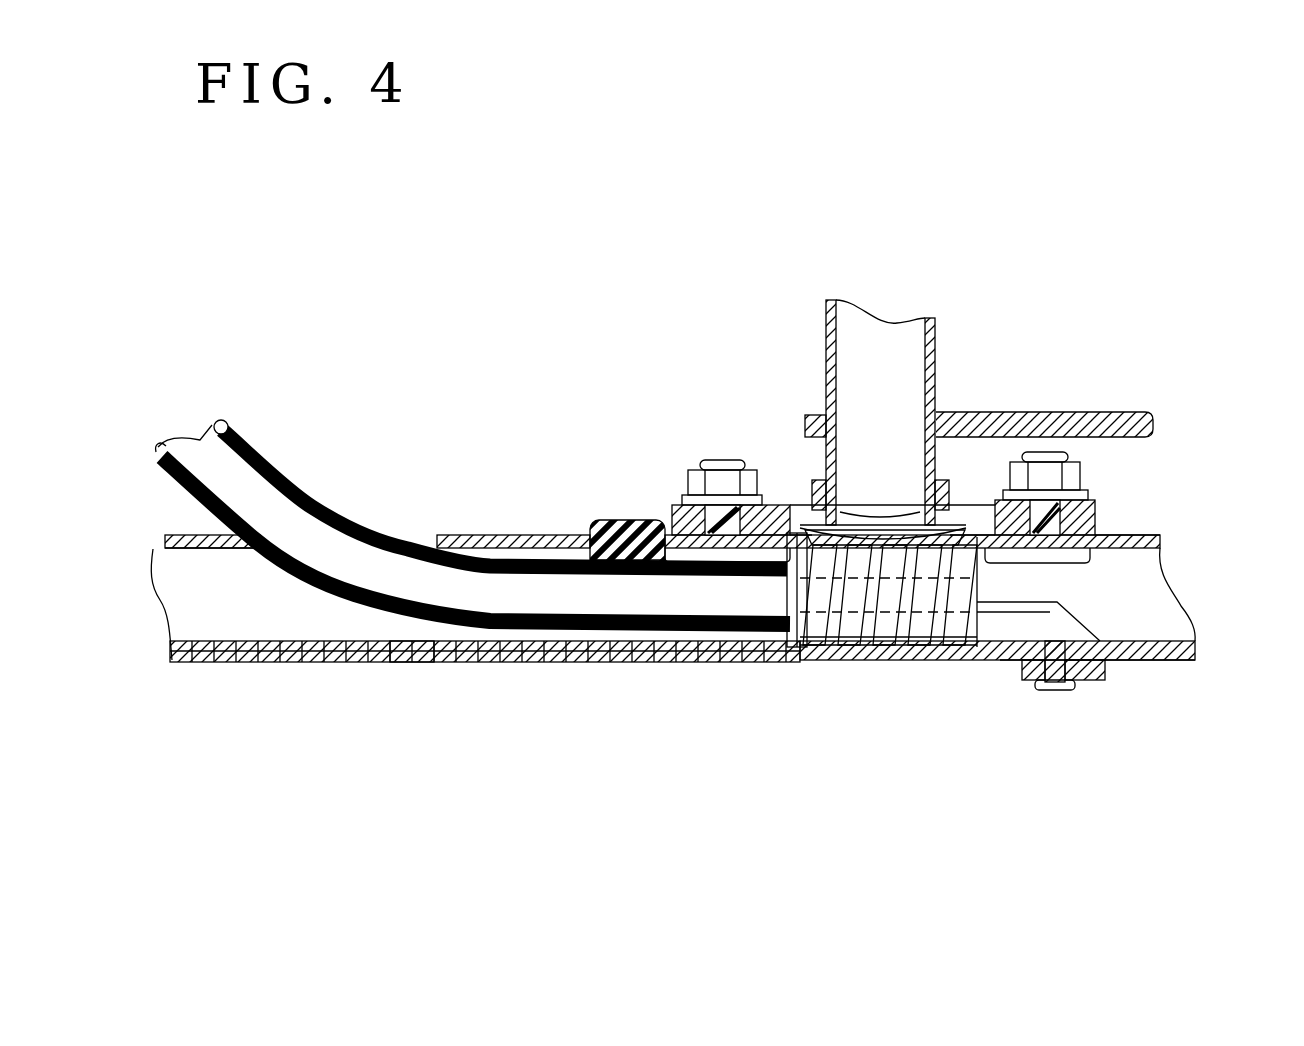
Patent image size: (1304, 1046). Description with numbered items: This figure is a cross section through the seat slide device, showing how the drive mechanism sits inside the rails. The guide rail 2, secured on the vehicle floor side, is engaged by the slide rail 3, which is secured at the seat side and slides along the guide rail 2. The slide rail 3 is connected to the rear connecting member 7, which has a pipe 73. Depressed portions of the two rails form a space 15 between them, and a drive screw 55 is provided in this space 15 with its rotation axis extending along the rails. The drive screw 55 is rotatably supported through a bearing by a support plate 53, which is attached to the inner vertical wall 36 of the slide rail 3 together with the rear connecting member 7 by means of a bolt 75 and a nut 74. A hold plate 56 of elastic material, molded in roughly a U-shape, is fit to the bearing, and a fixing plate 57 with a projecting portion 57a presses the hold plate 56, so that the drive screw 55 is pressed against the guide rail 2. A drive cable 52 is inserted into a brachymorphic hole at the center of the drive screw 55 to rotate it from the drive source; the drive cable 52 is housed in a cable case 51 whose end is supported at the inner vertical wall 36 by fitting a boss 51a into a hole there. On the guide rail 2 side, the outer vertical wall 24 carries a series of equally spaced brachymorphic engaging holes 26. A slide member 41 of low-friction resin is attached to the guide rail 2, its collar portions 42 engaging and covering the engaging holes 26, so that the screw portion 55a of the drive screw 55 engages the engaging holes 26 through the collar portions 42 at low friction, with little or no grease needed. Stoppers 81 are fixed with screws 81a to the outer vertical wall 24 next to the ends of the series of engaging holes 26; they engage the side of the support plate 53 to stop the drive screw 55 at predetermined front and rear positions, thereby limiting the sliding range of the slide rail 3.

The guide rail 2 is at (1130, 672).
The slide rail 3 is at (1123, 517).
The rear connecting member 7 is at (956, 376).
The space 15 is at (330, 610).
The outer vertical wall 24 is at (1167, 662).
The engaging hole 26 is at (528, 643).
The inner vertical wall 36 is at (1118, 527).
The slide member 41 is at (398, 643).
The collar portion 42 is at (770, 647).
The cable case 51 is at (343, 523).
The boss 51a is at (613, 519).
The drive cable 52 is at (297, 523).
The support plate 53 is at (660, 518).
The drive screw 55 is at (843, 645).
The screw portion 55a is at (878, 645).
The hold plate 56 is at (808, 522).
The fixing plate 57 is at (773, 500).
The projecting portion 57a is at (877, 512).
The pipe 73 is at (943, 333).
The nut 74 is at (1072, 481).
The bolt 75 is at (1092, 500).
The stopper 81 is at (1010, 623).
The screw 81a is at (1060, 690).